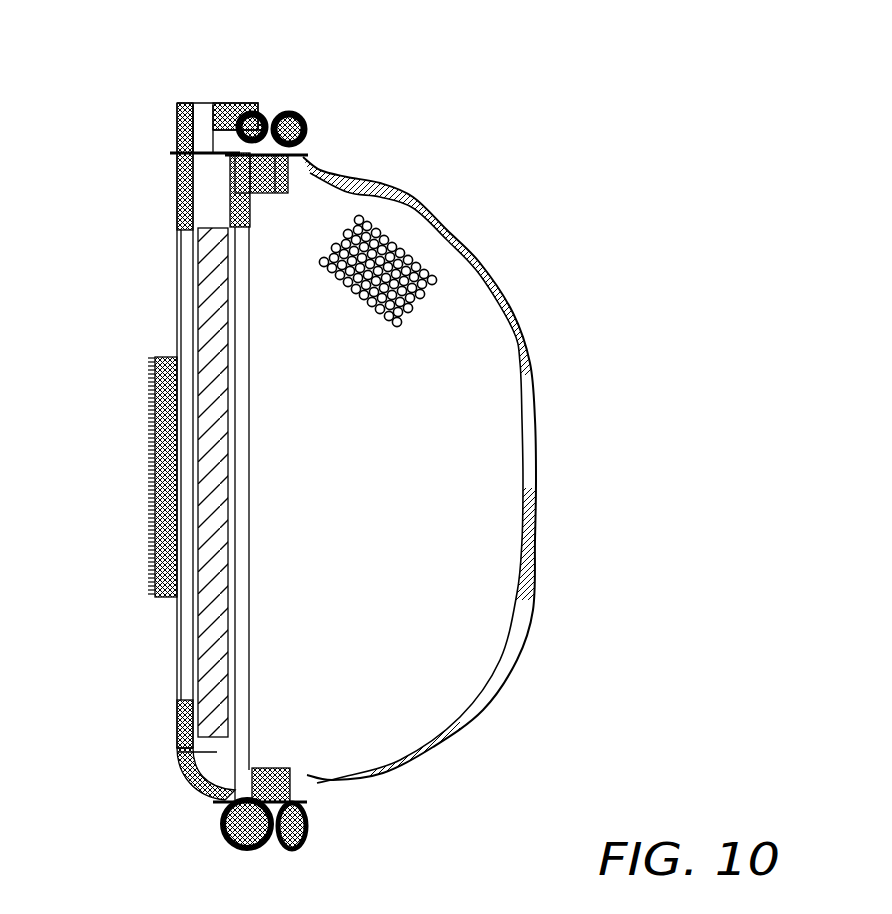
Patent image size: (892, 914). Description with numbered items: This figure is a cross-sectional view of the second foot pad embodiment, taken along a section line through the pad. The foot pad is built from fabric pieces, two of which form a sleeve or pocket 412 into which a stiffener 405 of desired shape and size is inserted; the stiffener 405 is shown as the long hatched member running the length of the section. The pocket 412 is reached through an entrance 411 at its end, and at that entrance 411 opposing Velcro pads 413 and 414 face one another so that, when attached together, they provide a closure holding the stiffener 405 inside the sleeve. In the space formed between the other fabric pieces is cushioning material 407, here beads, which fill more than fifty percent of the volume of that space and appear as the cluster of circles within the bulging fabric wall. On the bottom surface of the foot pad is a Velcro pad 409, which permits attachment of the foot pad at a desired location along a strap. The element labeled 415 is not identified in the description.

The stiffener 405 is at (205, 637).
The cushioning material 407 is at (433, 283).
The Velcro pad 409 is at (152, 390).
The entrance 411 is at (212, 98).
The pocket 412 is at (178, 752).
The Velcro pad 413 is at (195, 103).
The Velcro pad 414 is at (225, 103).
The bottom seal 415 is at (307, 802).